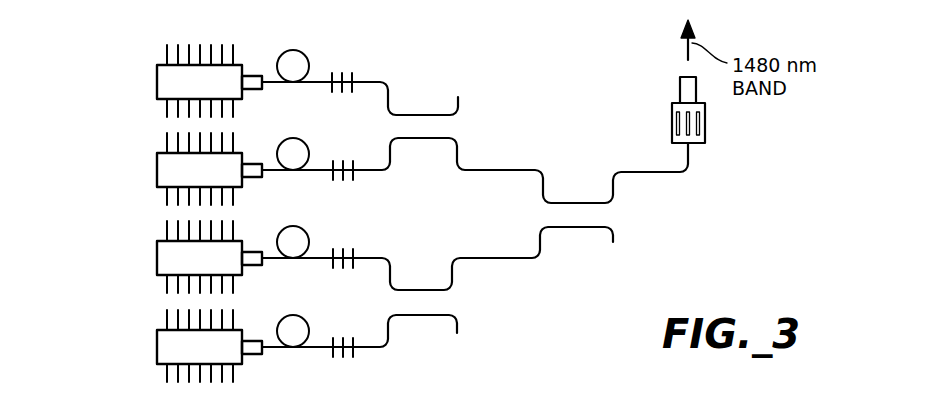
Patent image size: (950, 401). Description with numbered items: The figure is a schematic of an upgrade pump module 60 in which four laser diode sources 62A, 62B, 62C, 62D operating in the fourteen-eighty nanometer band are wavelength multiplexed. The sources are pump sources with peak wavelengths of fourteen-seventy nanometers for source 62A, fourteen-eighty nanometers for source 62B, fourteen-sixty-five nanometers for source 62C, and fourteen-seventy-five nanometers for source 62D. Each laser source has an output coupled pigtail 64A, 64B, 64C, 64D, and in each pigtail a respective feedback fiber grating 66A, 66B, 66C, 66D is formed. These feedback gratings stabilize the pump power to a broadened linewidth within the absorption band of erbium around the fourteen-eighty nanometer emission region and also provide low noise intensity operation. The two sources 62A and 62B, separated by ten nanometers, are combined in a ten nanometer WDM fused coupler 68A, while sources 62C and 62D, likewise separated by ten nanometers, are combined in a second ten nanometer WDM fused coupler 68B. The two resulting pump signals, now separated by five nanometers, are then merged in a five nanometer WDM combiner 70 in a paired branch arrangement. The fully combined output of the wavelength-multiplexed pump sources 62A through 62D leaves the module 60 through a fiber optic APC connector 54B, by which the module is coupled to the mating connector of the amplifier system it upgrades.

The fiber optic APC connector 54B is at (705, 125).
The upgrade pump module 60 is at (528, 57).
The laser diode source 62A is at (157, 82).
The laser diode source 62B is at (157, 170).
The laser diode source 62C is at (157, 258).
The laser diode source 62D is at (157, 347).
The output coupled pigtail 64A is at (296, 51).
The output coupled pigtail 64B is at (296, 139).
The output coupled pigtail 64C is at (296, 227).
The output coupled pigtail 64D is at (296, 316).
The feedback fiber grating 66A is at (356, 78).
The feedback fiber grating 66B is at (356, 175).
The feedback fiber grating 66C is at (356, 254).
The feedback fiber grating 66D is at (356, 352).
The WDM fused coupler 68A is at (425, 112).
The WDM fused coupler 68B is at (427, 289).
The WDM combiner 70 is at (585, 228).